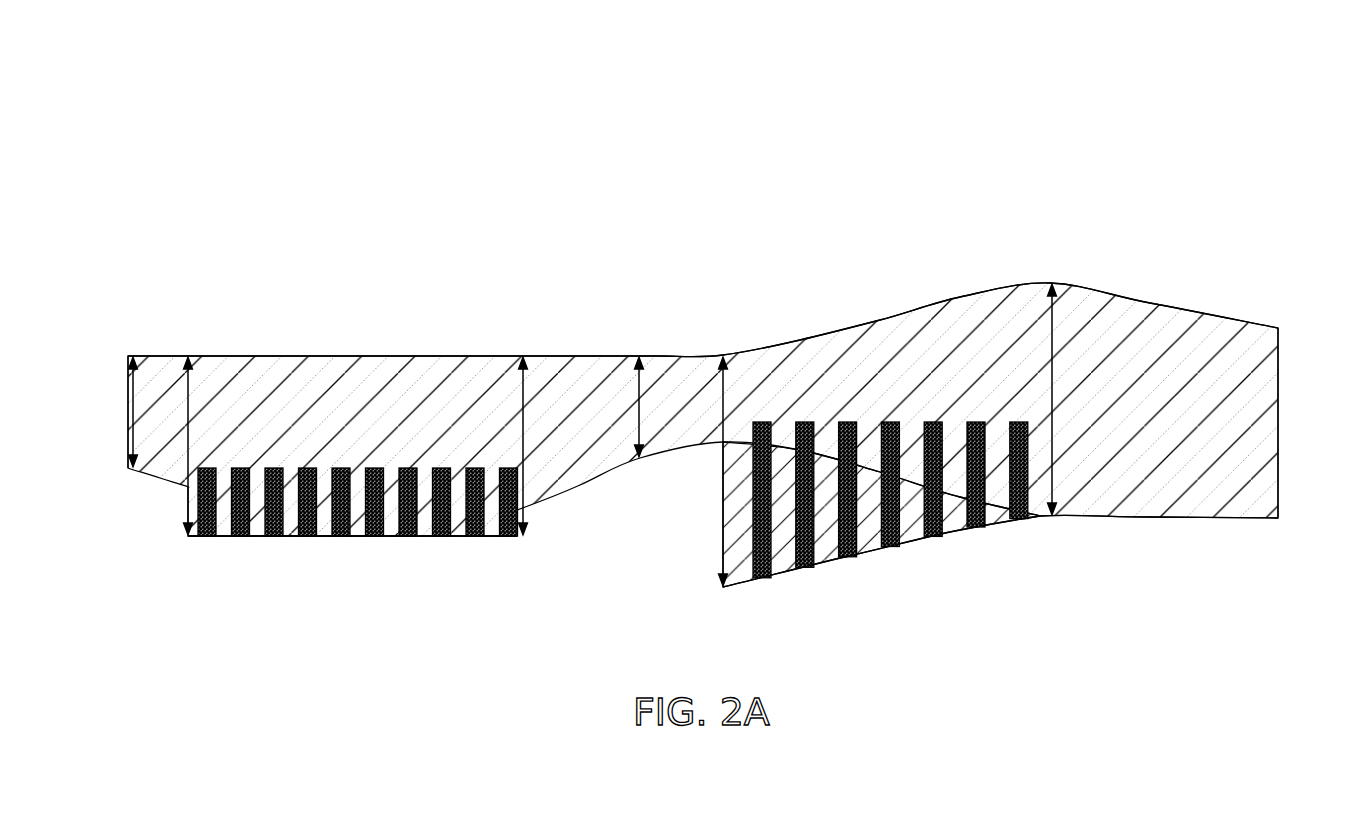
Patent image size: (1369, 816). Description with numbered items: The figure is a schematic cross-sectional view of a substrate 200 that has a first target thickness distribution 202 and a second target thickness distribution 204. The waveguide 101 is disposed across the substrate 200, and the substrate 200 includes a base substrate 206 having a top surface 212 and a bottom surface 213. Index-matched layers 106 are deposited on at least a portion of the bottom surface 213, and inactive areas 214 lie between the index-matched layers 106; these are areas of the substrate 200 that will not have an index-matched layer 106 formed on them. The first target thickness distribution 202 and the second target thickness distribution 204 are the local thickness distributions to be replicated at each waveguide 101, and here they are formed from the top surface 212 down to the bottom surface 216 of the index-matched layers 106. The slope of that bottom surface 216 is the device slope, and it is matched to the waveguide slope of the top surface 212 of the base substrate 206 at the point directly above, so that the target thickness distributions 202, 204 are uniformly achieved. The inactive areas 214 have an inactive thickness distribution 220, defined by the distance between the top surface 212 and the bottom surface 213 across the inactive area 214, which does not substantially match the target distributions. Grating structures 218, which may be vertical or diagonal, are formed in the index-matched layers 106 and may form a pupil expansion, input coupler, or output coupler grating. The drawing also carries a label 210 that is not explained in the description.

The substrate 200 is at (138, 112).
The waveguide 101 is at (102, 355).
The first target thickness distribution 202 is at (188, 406).
The second target thickness distribution 204 is at (724, 402).
The first top surface 210 is at (375, 356).
The top surface 212 is at (1216, 313).
The base substrate 206 is at (1280, 410).
The bottom surface 213 is at (1250, 521).
The inactive areas 214 is at (687, 315).
The inactive thickness distribution 220 is at (641, 410).
The bottom surface of the index-matched layers 216 is at (490, 537).
The grating structures 218 is at (273, 524).
The index-matched layers 106 is at (387, 537).